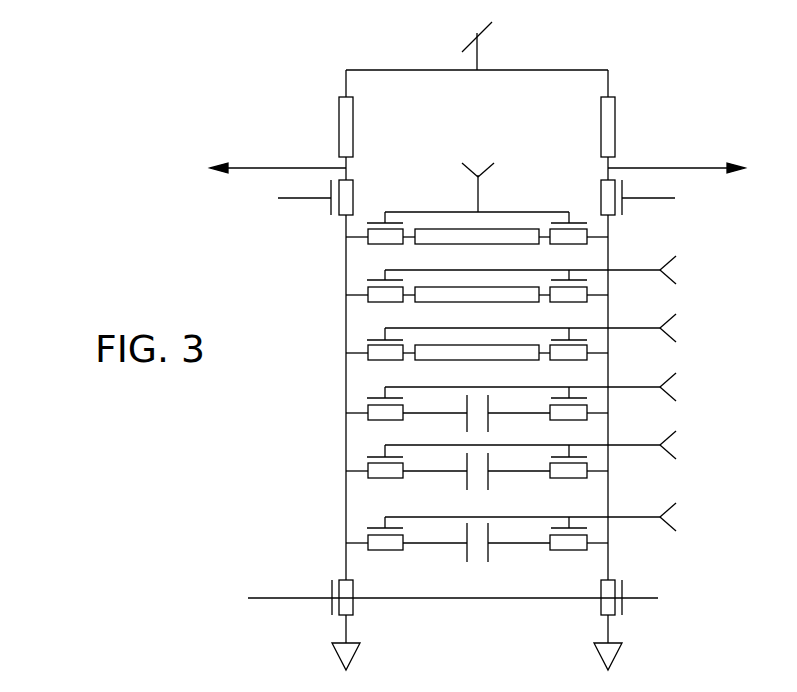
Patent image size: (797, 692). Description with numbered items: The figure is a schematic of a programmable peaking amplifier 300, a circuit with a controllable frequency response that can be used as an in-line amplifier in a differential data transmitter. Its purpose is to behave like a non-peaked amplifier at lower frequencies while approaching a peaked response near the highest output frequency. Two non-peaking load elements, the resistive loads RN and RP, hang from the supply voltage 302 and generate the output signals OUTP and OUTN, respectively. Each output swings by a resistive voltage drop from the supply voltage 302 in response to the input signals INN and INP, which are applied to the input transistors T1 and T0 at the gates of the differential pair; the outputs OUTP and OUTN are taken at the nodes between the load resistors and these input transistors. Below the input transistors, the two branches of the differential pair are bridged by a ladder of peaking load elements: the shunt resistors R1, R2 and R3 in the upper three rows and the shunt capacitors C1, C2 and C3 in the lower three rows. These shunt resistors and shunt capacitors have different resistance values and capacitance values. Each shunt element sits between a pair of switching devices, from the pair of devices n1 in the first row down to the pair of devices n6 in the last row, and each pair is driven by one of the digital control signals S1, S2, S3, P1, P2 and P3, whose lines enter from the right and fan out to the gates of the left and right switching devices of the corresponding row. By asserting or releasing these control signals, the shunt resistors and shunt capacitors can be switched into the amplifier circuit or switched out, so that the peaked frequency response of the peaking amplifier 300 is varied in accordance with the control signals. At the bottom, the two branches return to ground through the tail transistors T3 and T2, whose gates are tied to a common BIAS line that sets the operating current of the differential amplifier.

The programmable peaking amplifier 300 is at (736, 41).
The supply voltage 302 is at (474, 35).
The resistive load RN is at (361, 127).
The resistive load RP is at (593, 127).
The output signal OUTP is at (278, 155).
The output signal OUTN is at (676, 155).
The input signal INN is at (301, 185).
The input signal INP is at (652, 185).
The input transistor T1 is at (355, 196).
The input transistor T0 is at (599, 196).
The digital control signal S1 is at (477, 180).
The digital control signal S2 is at (535, 270).
The digital control signal S3 is at (535, 328).
The digital control signal P1 is at (535, 387).
The digital control signal P2 is at (535, 445).
The digital control signal P3 is at (535, 517).
The shunt resistor R1 is at (498, 240).
The shunt resistor R2 is at (498, 298).
The shunt resistor R3 is at (466, 357).
The shunt capacitor C1 is at (500, 387).
The shunt capacitor C2 is at (505, 445).
The shunt capacitor C3 is at (503, 517).
The pair of switching devices n1 is at (477, 248).
The pair of switching devices n6 is at (477, 556).
The bias transistor T3 is at (356, 593).
The bias transistor T2 is at (598, 594).
The bias input BIAS is at (451, 585).